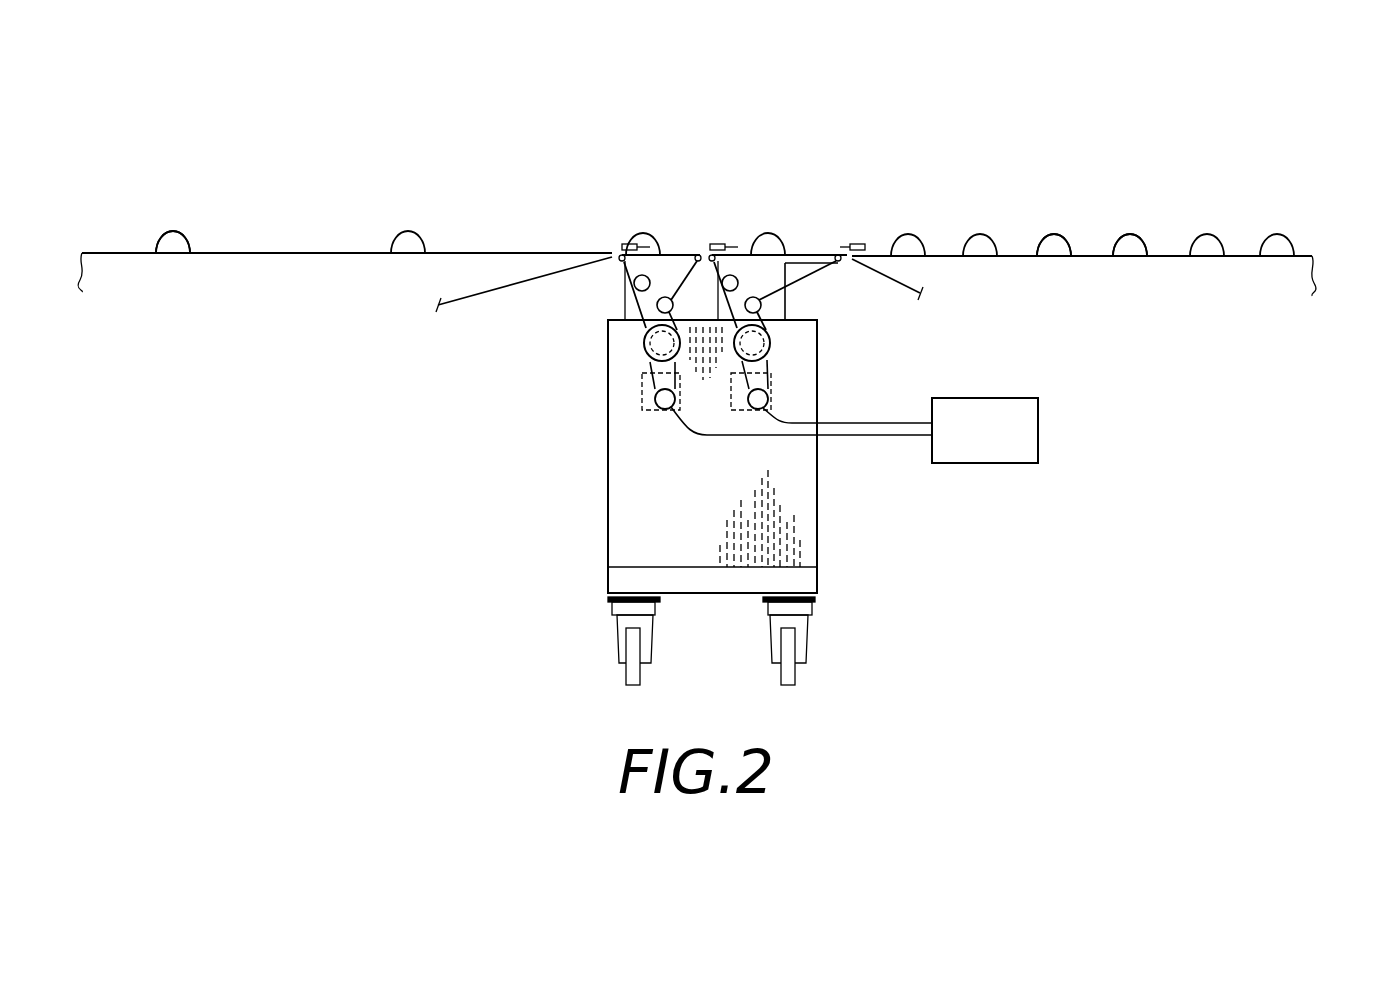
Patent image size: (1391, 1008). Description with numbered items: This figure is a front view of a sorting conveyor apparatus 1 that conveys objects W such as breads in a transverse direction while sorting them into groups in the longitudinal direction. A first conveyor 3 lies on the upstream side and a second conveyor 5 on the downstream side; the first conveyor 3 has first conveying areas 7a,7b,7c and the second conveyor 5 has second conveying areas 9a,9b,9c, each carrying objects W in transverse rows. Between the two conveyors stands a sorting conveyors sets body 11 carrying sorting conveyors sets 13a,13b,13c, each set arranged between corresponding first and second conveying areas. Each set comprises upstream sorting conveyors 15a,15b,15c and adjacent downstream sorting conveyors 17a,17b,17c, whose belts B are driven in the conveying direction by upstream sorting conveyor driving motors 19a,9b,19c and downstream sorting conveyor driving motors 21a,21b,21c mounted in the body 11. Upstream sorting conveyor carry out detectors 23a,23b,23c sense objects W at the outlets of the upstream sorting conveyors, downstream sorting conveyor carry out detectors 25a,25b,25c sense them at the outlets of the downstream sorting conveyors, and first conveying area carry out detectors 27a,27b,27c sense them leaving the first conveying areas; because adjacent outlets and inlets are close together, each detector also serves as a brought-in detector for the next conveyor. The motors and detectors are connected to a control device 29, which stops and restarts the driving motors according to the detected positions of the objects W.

The sorting conveyor apparatus 1 is at (785, 92).
The first conveyor 3 is at (1152, 167).
The second conveyor 5 is at (283, 198).
The first conveying areas 7a,7b,7c is at (1243, 256).
The second conveying areas 9a,9b,9c is at (345, 253).
The sorting conveyors sets body 11 is at (608, 505).
The sorting conveyors sets 13a,13b,13c is at (758, 112).
The upstream sorting conveyors 15a,15b,15c is at (823, 254).
The downstream sorting conveyors 17a,17b,17c is at (668, 252).
The upstream sorting conveyor driving motors 19a,9b,19c is at (770, 400).
The downstream sorting conveyor driving motors 21a,21b,21c is at (656, 401).
The upstream sorting conveyor carry out detectors 23a,23b,23c is at (727, 247).
The downstream sorting conveyor carry out detectors 25a,25b,25c is at (622, 248).
The first conveying area carry out detectors 27a,27b,27c is at (866, 247).
The control device 29 is at (998, 465).
The objects to be conveyed W is at (172, 231).
The belts B is at (622, 283).